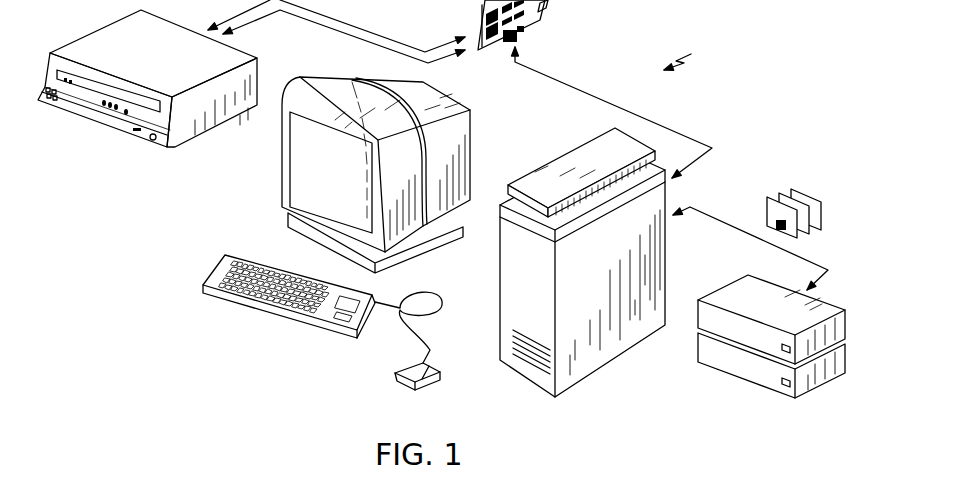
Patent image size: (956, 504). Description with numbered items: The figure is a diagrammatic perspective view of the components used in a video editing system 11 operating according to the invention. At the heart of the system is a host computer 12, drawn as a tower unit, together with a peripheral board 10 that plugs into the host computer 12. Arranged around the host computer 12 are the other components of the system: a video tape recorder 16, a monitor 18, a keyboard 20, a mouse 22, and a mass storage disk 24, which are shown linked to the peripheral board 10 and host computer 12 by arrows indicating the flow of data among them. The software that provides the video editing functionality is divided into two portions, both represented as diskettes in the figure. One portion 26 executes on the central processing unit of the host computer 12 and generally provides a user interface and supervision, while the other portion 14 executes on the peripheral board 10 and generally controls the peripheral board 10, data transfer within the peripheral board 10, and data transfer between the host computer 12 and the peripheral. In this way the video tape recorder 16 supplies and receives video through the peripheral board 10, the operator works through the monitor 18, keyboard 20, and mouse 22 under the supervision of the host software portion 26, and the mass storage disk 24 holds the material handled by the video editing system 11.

The peripheral board 10 is at (553, 0).
The video editing system 11 is at (690, 51).
The host computer 12 is at (628, 303).
The software portion executing on the peripheral board 14 is at (767, 196).
The video tape recorder 16 is at (170, 71).
The monitor 18 is at (340, 189).
The keyboard 20 is at (252, 307).
The mouse 22 is at (442, 376).
The mass storage disk 24 is at (781, 311).
The software portion executing on the host computer CPU 26 is at (781, 191).